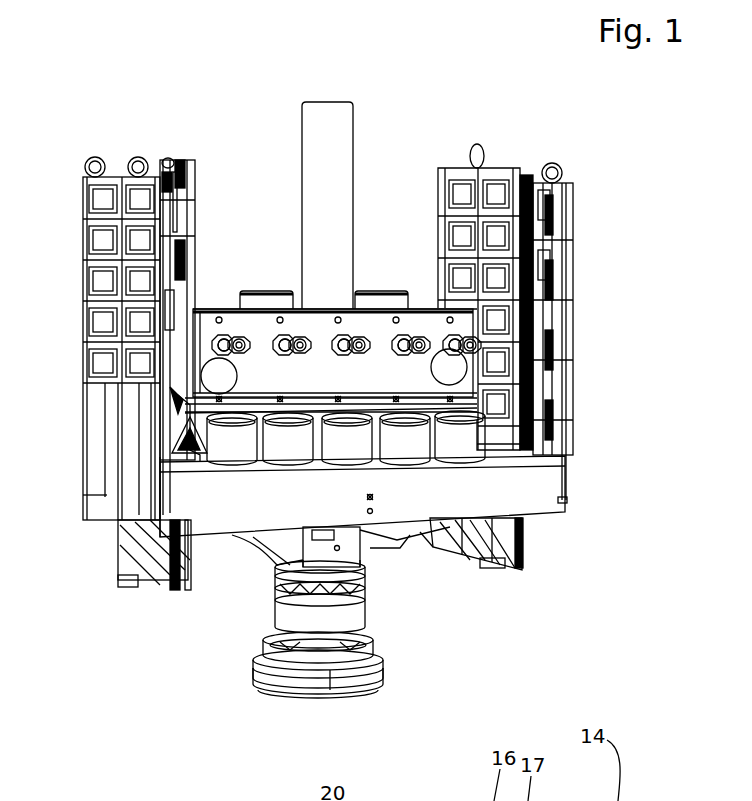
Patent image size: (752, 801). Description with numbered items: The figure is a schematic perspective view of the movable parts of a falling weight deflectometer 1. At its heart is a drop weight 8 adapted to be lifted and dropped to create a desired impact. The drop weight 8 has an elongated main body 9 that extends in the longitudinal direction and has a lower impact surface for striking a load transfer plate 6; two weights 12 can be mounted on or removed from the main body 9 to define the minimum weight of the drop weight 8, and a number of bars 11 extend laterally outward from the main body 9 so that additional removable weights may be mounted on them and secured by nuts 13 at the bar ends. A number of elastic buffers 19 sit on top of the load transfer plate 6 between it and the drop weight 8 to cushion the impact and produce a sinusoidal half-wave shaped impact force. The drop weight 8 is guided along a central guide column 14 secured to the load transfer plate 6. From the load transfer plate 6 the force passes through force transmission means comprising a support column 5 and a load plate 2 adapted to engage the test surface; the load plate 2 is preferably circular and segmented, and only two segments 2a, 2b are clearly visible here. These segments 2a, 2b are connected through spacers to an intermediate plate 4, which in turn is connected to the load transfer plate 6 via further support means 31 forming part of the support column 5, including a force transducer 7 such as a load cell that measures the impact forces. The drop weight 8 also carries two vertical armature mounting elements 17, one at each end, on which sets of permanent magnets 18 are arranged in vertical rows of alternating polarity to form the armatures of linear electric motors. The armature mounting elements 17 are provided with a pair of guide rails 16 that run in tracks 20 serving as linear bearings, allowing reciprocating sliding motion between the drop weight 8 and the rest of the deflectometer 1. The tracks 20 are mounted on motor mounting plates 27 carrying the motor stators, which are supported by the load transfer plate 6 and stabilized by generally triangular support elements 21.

The falling weight deflectometer 1 is at (318, 72).
The load plate 2 is at (318, 710).
The segment of load plate 2a is at (260, 664).
The segment of load plate 2b is at (370, 680).
The intermediate plate 4 is at (265, 638).
The support column 5 is at (373, 563).
The load transfer plate 6 is at (470, 463).
The force transducer 7 is at (282, 600).
The drop weight 8 is at (366, 262).
The main body 9 is at (420, 363).
The bars 11 is at (237, 355).
The weights 12 is at (255, 300).
The nuts 13 is at (238, 353).
The central guide column 14 is at (320, 187).
The guide rails 16 is at (535, 170).
The armature mounting elements 17 is at (190, 160).
The permanent magnets 18 is at (162, 574).
The elastic buffers 19 is at (470, 440).
The tracks 20 is at (547, 217).
The support elements 21 is at (185, 425).
The motor mounting plates 27 is at (98, 197).
The further support means 31 is at (397, 540).